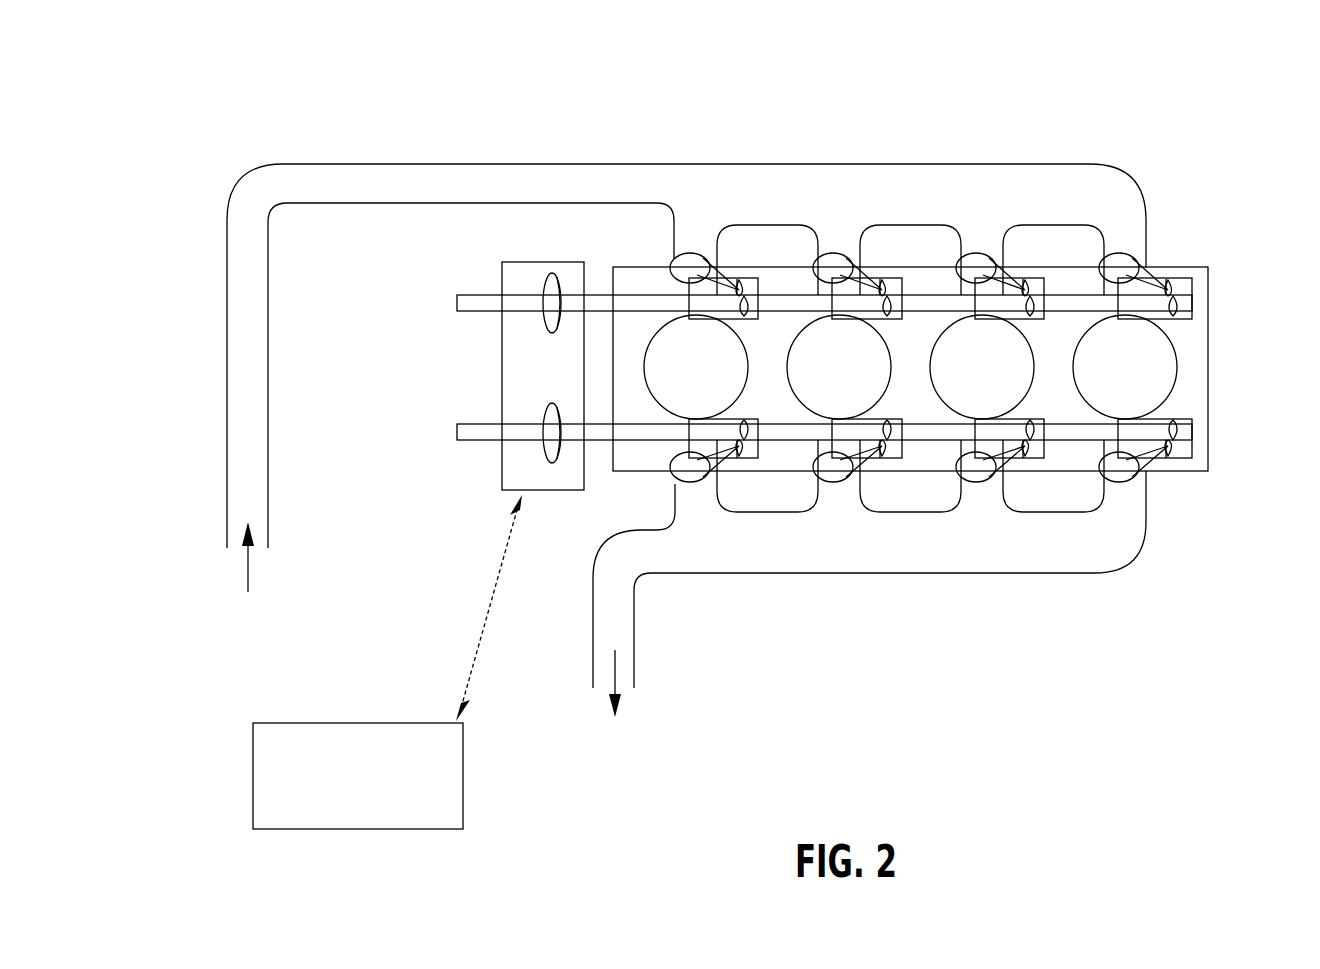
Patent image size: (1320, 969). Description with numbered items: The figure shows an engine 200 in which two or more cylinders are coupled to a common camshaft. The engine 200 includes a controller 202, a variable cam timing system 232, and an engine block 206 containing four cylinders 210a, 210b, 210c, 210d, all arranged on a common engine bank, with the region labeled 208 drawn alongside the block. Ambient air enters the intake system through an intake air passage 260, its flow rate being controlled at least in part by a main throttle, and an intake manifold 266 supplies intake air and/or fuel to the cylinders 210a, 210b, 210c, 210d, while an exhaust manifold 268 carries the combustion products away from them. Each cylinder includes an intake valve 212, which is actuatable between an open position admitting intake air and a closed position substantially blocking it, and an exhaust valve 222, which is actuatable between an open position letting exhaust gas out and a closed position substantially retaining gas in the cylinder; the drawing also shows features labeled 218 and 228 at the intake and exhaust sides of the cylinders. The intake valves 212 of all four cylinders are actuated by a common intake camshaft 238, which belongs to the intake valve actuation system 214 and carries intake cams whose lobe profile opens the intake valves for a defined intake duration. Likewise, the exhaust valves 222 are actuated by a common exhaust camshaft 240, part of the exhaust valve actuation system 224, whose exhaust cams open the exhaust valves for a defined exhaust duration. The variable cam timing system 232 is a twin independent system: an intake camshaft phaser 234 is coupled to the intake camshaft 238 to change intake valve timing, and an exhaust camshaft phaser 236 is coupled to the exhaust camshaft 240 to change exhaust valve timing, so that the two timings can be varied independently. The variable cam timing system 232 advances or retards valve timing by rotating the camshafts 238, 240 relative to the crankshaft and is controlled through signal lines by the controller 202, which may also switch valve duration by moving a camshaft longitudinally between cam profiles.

The engine 200 is at (265, 67).
The controller 202 is at (387, 662).
The engine block 206 is at (1222, 264).
The cylinder block 208 is at (1198, 368).
The cylinder 210a is at (696, 367).
The cylinder 210b is at (839, 367).
The cylinder 210c is at (982, 367).
The cylinder 210d is at (1125, 367).
The intake valve 212 is at (838, 253).
The intake valve actuation system 214 is at (900, 318).
The intake port 218 is at (895, 291).
The exhaust valve 222 is at (826, 483).
The exhaust valve actuation system 224 is at (922, 405).
The exhaust port 228 is at (895, 450).
The variable cam timing system 232 is at (502, 483).
The intake camshaft phaser 234 is at (548, 273).
The exhaust camshaft phaser 236 is at (553, 464).
The intake camshaft 238 is at (626, 292).
The exhaust camshaft 240 is at (650, 456).
The intake air passage 260 is at (268, 293).
The intake manifold 266 is at (910, 239).
The exhaust manifold 268 is at (910, 499).